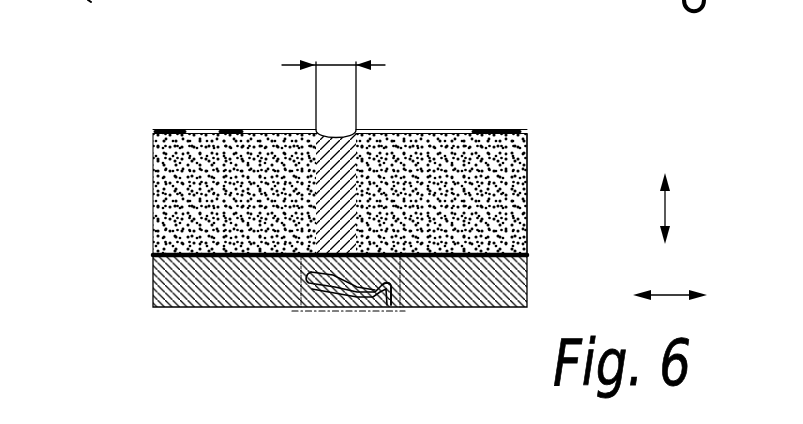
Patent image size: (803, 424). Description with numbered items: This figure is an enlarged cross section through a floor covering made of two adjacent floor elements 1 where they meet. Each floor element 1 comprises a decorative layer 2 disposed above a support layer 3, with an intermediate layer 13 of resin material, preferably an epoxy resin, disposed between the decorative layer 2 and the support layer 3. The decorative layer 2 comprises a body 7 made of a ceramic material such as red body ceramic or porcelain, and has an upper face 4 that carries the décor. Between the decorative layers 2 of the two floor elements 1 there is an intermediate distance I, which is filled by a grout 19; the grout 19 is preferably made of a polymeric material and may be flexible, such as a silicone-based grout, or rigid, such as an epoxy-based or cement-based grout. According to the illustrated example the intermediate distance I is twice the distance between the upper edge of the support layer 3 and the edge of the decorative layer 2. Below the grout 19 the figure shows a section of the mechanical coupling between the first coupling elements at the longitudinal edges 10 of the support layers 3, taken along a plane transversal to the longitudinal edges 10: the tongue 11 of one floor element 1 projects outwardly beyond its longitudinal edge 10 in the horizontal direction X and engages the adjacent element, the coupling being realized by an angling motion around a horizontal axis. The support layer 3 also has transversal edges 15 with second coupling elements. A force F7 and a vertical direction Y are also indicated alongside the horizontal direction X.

The floor element 1 is at (190, 100).
The decorative layer 2 is at (153, 190).
The support layer 3 is at (165, 290).
The upper face 4 is at (153, 130).
The body 7 is at (527, 218).
The longitudinal edges 10 is at (326, 329).
The tongue 11 is at (412, 290).
The intermediate layer 13 is at (153, 255).
The transversal edges 15 is at (300, 305).
The grout 19 is at (357, 135).
The intermediate distance I is at (333, 65).
The force F7 is at (351, 311).
The horizontal direction X is at (674, 295).
The Y axis Y is at (666, 207).